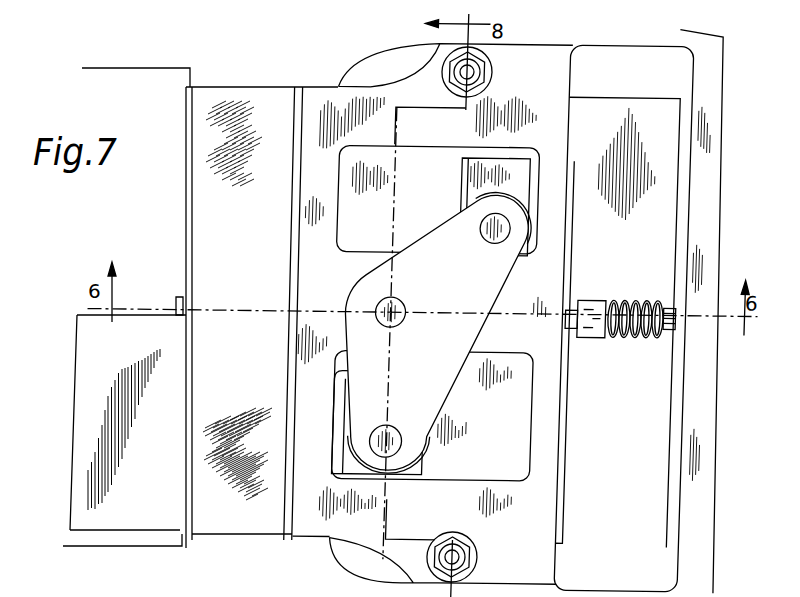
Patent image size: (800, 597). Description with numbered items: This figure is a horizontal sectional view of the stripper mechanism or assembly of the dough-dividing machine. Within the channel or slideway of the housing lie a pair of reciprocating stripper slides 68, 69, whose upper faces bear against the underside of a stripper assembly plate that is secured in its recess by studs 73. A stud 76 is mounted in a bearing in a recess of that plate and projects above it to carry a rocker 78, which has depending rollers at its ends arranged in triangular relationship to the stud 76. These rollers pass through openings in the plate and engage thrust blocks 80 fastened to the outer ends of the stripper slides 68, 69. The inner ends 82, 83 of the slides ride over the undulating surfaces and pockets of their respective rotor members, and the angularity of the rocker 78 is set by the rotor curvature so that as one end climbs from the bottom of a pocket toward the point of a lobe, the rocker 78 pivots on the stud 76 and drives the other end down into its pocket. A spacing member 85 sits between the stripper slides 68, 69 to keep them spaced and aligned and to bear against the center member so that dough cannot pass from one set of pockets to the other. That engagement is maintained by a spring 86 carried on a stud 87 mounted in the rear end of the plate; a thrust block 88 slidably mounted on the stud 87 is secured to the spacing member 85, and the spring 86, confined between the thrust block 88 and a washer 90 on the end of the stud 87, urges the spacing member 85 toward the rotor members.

The stripper slide 68 is at (578, 470).
The stripper slide 69 is at (619, 94).
The stud 73 is at (480, 75).
The stud 76 is at (406, 318).
The rocker 78 is at (460, 397).
The thrust block 80 is at (451, 193).
The inner end of stripper slide 82 is at (73, 445).
The inner end of stripper slide 83 is at (186, 198).
The spacing member 85 is at (177, 300).
The spring 86 is at (629, 299).
The stud 87 is at (580, 304).
The thrust block 88 is at (600, 337).
The washer 90 is at (672, 332).